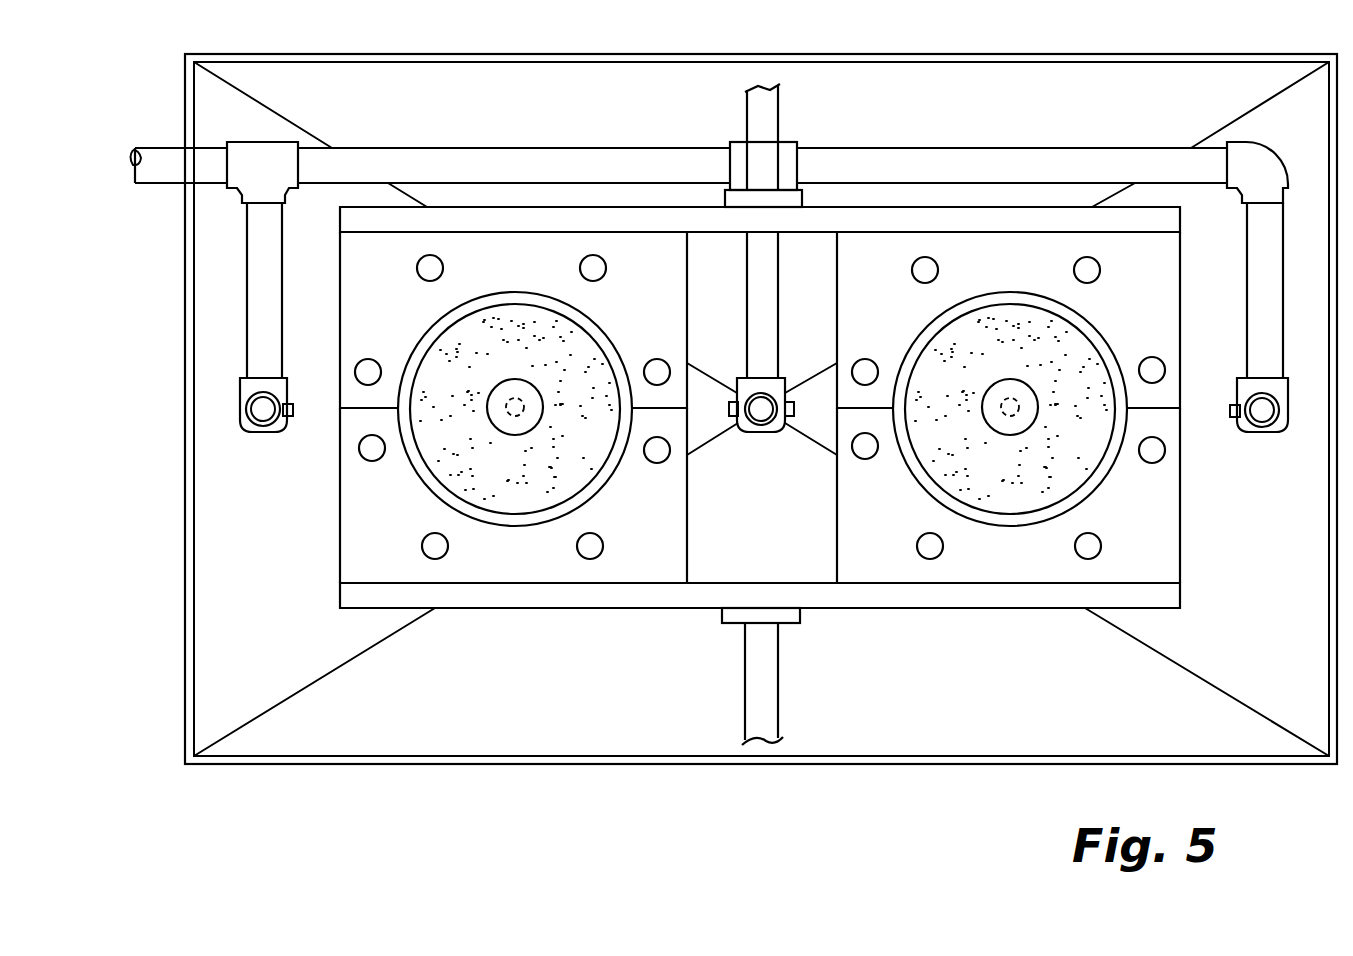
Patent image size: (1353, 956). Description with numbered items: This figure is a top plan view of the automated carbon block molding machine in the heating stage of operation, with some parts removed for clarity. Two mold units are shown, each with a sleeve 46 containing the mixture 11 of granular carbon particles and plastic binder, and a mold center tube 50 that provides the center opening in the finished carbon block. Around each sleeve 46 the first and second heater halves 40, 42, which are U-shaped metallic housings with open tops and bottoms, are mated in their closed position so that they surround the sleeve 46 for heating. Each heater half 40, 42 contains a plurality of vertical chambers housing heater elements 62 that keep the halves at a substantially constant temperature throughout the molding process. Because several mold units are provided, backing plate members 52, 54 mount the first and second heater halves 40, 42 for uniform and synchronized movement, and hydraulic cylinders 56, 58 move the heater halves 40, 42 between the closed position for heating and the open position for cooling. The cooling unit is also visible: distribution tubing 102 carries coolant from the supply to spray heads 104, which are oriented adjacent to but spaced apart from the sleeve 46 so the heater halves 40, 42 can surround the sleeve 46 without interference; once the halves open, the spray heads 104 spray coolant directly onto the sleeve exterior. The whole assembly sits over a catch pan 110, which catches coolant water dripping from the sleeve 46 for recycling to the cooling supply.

The catch pan 110 is at (287, 653).
The distribution tubing 102 is at (590, 152).
The hydraulic cylinder 58 is at (774, 116).
The hydraulic cylinder 56 is at (774, 682).
The backing plate member 54 is at (350, 218).
The backing plate member 52 is at (373, 600).
The second heater half 42 is at (350, 285).
The first heater half 40 is at (355, 542).
The heater elements 62 is at (408, 297).
The sleeve 46 is at (500, 527).
The mixture of granular carbon particles and plastic binder material 11 is at (590, 373).
The mold center tube 50 is at (517, 425).
The spray heads 104 is at (290, 418).